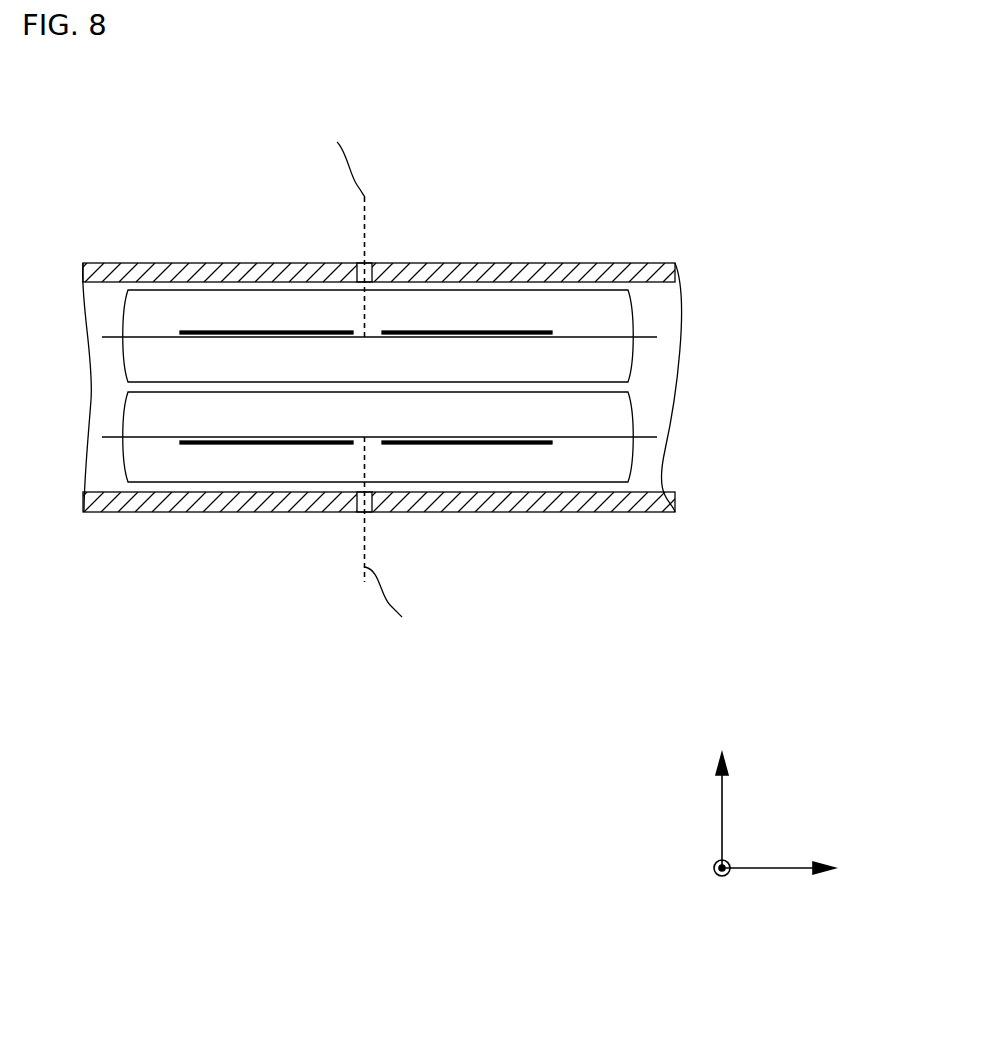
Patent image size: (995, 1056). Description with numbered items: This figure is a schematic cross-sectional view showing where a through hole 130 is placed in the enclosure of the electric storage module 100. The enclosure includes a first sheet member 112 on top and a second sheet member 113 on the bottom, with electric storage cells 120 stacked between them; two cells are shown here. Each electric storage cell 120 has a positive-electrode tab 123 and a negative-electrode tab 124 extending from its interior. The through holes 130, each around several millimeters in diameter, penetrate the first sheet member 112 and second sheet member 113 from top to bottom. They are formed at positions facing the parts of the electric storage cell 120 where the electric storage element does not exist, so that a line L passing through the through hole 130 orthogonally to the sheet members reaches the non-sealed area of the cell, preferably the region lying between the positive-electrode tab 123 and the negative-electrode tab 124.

The electronic component 100 is at (767, 264).
The first sheet member 112 is at (622, 263).
The second sheet member 113 is at (633, 512).
The electric storage cell 120 is at (612, 313).
The positive-electrode tab 123 is at (483, 332).
The negative-electrode tab 124 is at (247, 332).
The through hole 130 is at (370, 263).